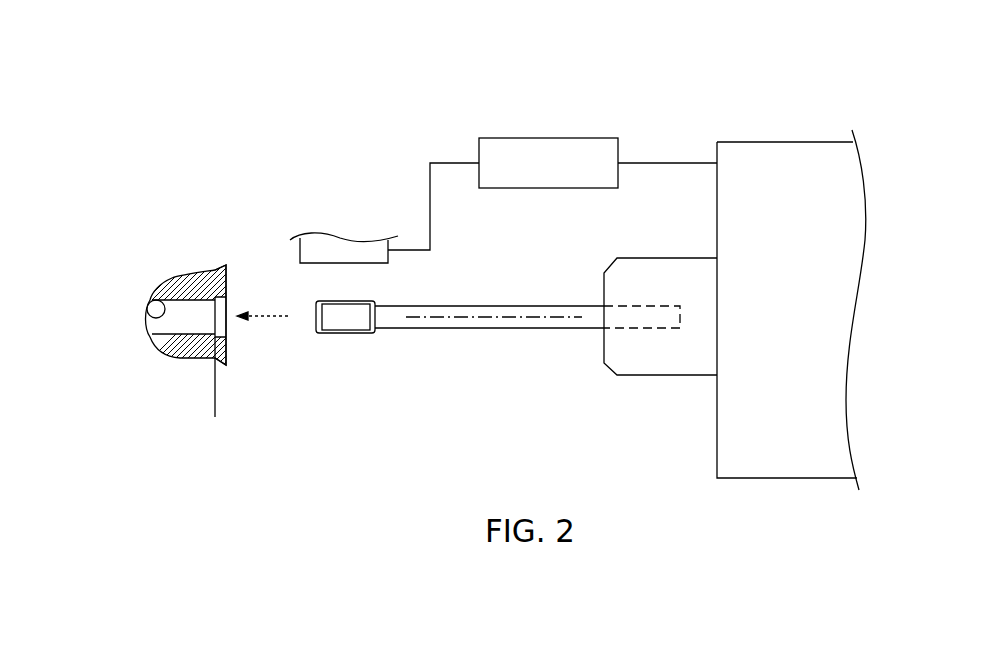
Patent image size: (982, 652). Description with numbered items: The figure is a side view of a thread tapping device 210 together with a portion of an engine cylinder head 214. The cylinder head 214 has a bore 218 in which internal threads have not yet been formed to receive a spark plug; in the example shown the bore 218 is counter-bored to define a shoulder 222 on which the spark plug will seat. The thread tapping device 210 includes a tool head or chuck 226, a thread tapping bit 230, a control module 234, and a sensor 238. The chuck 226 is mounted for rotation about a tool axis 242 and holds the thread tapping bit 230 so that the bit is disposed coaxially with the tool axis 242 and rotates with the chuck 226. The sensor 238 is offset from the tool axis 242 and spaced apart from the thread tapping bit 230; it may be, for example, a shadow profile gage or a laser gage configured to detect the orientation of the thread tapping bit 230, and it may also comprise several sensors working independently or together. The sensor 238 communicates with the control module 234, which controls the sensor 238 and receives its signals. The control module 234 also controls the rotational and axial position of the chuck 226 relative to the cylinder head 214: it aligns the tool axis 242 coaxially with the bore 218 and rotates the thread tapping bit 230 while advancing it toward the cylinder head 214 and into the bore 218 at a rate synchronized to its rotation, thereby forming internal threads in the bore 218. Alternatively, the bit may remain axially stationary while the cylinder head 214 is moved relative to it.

The thread tapping device 210 is at (693, 100).
The cylinder head 214 is at (183, 285).
The bore 218 is at (158, 312).
The shoulder 222 is at (218, 297).
The chuck 226 is at (658, 358).
The thread tapping bit 230 is at (447, 328).
The control module 234 is at (513, 137).
The sensor 238 is at (340, 240).
The tool axis 242 is at (483, 312).